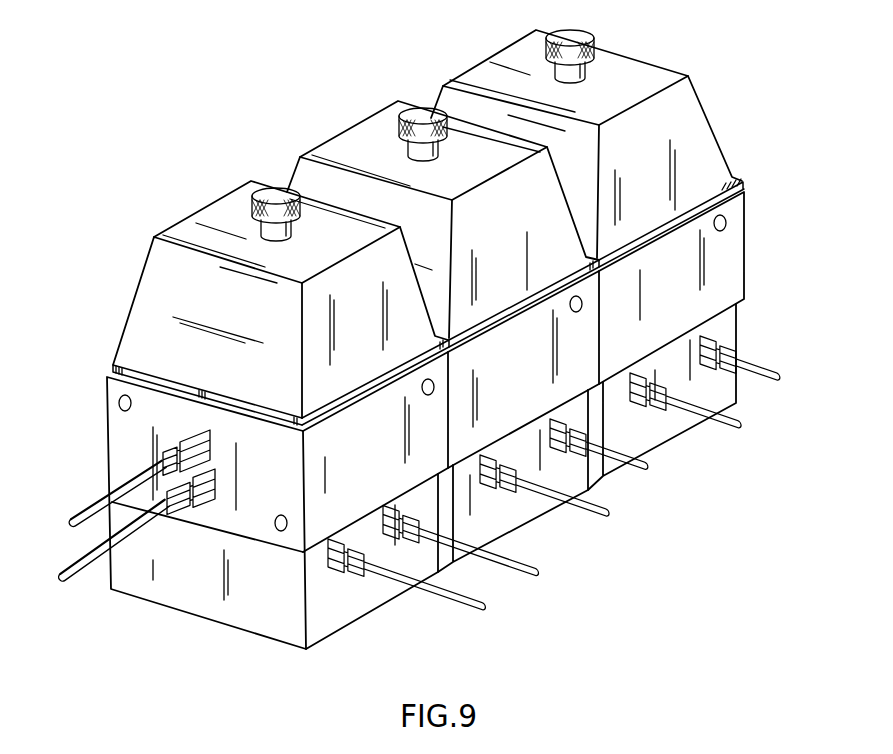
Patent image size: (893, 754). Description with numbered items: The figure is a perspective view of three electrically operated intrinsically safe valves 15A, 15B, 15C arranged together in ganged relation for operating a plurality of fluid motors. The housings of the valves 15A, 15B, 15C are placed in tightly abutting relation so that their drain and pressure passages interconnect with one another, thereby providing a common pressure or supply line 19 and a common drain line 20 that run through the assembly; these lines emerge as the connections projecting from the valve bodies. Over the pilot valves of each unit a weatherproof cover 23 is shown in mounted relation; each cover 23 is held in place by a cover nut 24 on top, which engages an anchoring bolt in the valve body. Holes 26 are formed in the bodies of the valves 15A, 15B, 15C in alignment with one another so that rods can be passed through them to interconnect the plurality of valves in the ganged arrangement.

The electrically operated valve 15A is at (383, 465).
The electrically operated valve 15B is at (531, 383).
The electrically operated valve 15C is at (679, 305).
The common pressure or supply line 19 is at (94, 570).
The common drain line 20 is at (73, 518).
The weatherproof cover 23 is at (692, 108).
The cover nut 24 is at (593, 53).
The holes 26 is at (118, 403).